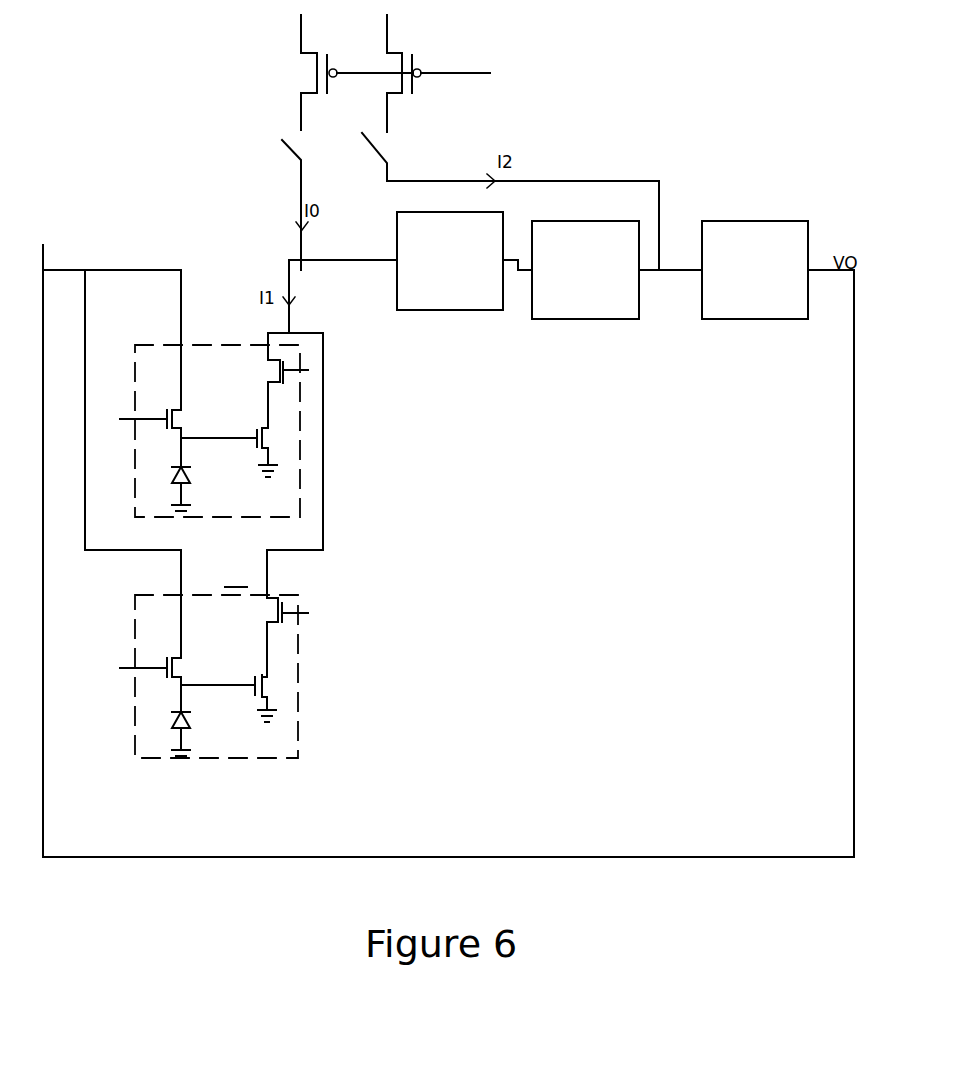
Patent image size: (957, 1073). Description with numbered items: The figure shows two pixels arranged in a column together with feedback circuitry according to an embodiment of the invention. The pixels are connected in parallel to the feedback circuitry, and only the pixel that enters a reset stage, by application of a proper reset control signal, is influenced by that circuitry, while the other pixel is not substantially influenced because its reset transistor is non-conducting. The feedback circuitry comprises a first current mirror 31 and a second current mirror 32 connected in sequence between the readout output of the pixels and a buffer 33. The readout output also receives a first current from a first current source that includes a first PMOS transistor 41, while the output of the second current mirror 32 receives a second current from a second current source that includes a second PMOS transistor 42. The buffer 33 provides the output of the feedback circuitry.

The PMOS transistor M4 41 is at (325, 72).
The PMOS transistor M5 42 is at (438, 73).
The first current mirror 31 is at (450, 261).
The second current mirror 32 is at (585, 270).
The buffer 33 is at (755, 270).